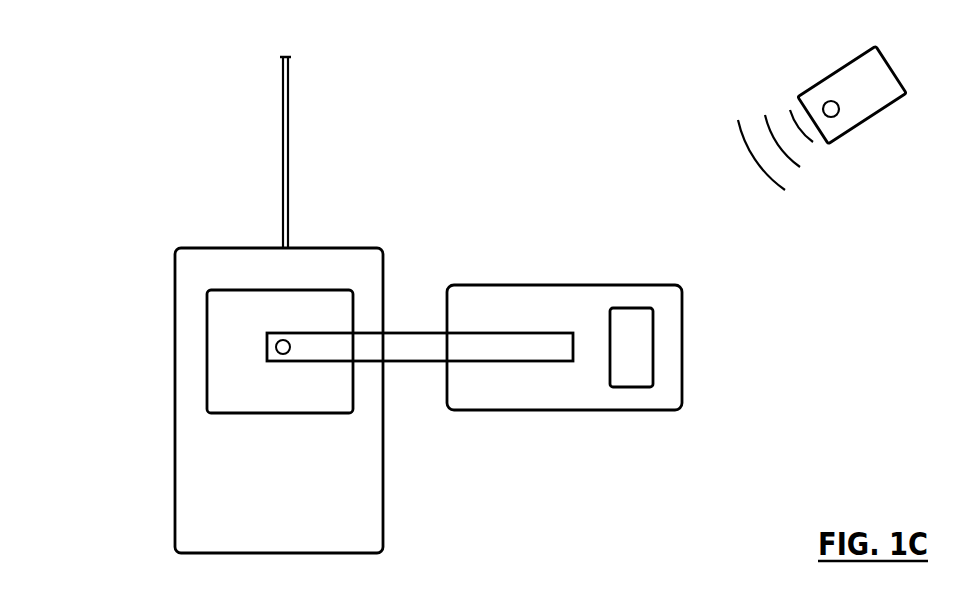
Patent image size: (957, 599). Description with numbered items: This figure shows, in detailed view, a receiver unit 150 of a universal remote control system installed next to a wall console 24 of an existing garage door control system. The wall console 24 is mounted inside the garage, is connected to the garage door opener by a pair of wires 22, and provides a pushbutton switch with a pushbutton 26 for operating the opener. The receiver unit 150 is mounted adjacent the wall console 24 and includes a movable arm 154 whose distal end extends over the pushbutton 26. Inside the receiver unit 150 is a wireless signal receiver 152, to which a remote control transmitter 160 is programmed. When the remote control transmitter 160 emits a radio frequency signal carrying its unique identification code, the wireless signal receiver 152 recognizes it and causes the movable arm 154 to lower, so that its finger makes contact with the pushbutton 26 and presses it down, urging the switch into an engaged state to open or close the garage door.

The pair of wires 22 is at (289, 120).
The wall console 24 is at (175, 497).
The pushbutton 26 is at (330, 300).
The receiver unit 150 is at (602, 410).
The wireless signal receiver 152 is at (627, 308).
The movable arm 154 is at (412, 362).
The remote control transmitter 160 is at (863, 124).